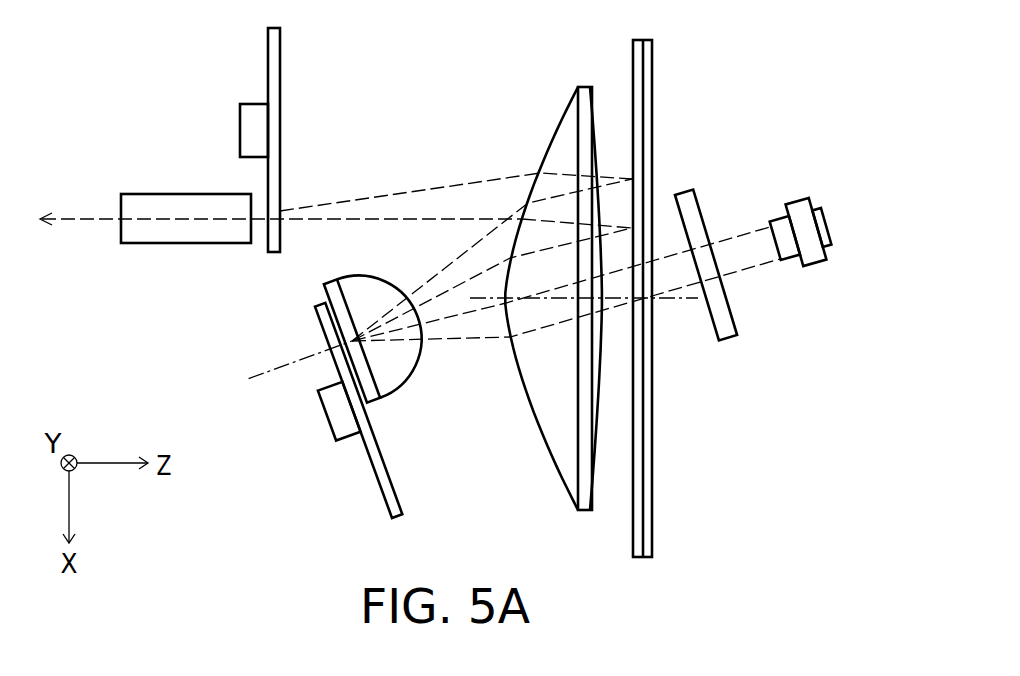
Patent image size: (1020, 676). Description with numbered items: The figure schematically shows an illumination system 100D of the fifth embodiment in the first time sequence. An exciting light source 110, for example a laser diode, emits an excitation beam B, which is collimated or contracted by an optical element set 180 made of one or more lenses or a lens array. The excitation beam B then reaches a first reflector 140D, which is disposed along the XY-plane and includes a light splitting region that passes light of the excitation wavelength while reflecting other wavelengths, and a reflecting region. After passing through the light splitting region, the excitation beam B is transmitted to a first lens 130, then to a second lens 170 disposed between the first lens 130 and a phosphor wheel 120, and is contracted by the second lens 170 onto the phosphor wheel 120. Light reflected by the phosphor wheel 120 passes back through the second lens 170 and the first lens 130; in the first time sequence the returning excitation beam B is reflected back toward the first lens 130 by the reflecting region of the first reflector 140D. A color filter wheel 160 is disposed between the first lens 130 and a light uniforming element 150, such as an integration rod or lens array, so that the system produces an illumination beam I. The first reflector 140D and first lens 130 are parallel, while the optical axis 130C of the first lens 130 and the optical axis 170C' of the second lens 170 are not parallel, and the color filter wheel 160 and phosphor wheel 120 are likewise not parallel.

The illumination system 100D is at (805, 67).
The exciting light source 110 is at (801, 205).
The phosphor wheel 120 is at (387, 495).
The first lens 130 is at (588, 85).
The optical axis of the first lens 130C is at (693, 301).
The first reflector 140D is at (652, 72).
The light uniforming element 150 is at (176, 202).
The color filter wheel 160 is at (268, 43).
The second lens 170 is at (370, 290).
The optical axis of the second lens 170C' is at (266, 350).
The optical element set 180 is at (729, 333).
The excitation beam B is at (462, 342).
The illumination beam I is at (72, 217).